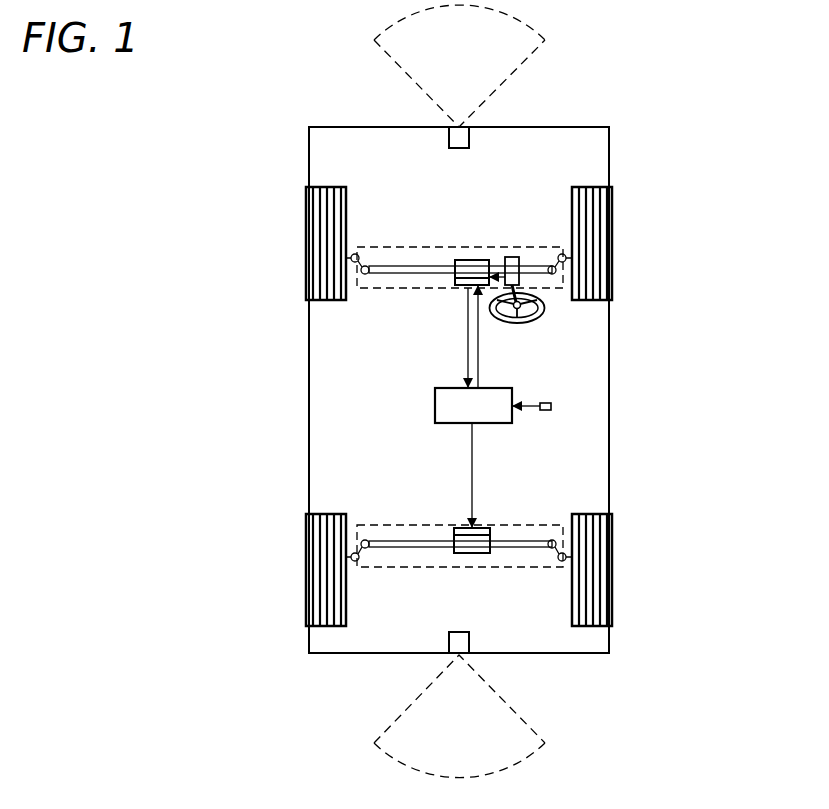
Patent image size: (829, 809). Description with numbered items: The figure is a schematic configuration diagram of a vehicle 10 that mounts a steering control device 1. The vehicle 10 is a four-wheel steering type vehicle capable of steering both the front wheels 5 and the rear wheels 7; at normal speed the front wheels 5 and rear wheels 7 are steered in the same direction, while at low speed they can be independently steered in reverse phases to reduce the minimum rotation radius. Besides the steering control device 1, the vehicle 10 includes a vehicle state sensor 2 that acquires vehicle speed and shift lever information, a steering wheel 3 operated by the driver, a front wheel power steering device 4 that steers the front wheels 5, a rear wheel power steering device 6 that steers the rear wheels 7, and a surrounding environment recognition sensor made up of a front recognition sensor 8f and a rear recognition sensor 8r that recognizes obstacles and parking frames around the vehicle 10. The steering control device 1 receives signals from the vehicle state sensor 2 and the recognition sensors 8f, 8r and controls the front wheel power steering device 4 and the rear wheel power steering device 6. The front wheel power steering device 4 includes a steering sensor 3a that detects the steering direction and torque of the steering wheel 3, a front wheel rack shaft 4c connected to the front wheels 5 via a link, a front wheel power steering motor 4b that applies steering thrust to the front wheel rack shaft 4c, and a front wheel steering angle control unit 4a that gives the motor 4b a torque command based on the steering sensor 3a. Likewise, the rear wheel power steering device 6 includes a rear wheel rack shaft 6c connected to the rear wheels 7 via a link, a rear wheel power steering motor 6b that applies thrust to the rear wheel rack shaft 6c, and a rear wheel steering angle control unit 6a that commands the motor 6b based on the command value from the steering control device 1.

The steering control device 1 is at (490, 423).
The vehicle state sensor 2 is at (551, 403).
The steering wheel 3 is at (539, 317).
The steering sensor 3a is at (512, 257).
The front wheel power steering device 4 is at (412, 247).
The front wheel steering angle control unit 4a is at (461, 286).
The front wheel power steering motor 4b is at (470, 260).
The front wheel rack shaft 4c is at (412, 274).
The front wheels 5 is at (306, 240).
The rear wheel power steering device 6 is at (503, 567).
The rear wheel steering angle control unit 6a is at (459, 528).
The rear wheel power steering motor 6b is at (467, 554).
The rear wheel rack shaft 6c is at (413, 548).
The rear wheels 7 is at (306, 568).
The front recognition sensor 8f is at (470, 136).
The rear recognition sensor 8r is at (470, 643).
The vehicle 10 is at (566, 127).